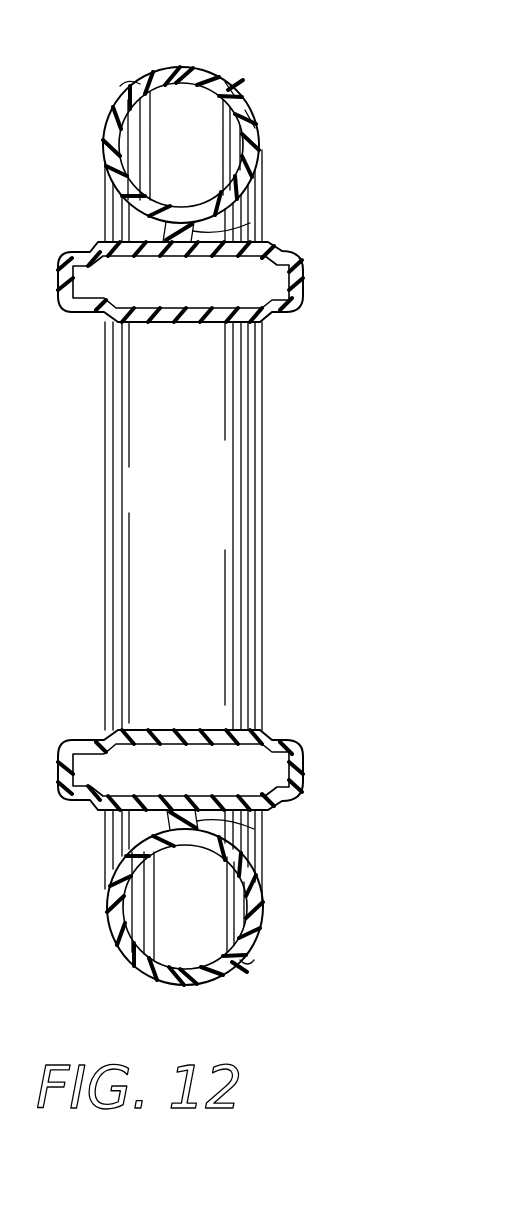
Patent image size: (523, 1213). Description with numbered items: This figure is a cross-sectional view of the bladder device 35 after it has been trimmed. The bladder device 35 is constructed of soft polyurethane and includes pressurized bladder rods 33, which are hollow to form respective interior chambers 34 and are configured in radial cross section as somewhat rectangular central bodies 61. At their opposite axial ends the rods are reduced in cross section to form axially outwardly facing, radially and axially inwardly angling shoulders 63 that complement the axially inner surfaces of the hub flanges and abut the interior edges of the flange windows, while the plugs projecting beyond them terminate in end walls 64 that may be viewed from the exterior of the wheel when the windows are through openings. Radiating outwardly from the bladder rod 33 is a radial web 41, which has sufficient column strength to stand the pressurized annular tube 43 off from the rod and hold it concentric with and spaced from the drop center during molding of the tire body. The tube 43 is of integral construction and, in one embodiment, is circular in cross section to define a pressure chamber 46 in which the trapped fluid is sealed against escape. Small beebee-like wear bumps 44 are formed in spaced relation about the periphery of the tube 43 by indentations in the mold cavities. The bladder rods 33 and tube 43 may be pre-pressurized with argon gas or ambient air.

The bladder rod 33 is at (221, 261).
The interior chamber 34 is at (134, 253).
The bladder device 35 is at (181, 69).
The radial web 41 is at (230, 223).
The annular tube 43 is at (259, 120).
The wear bump 44 is at (237, 85).
The pressure chamber 46 is at (198, 153).
The central body 61 is at (203, 325).
The shoulder 63 is at (270, 250).
The end wall 64 is at (302, 298).